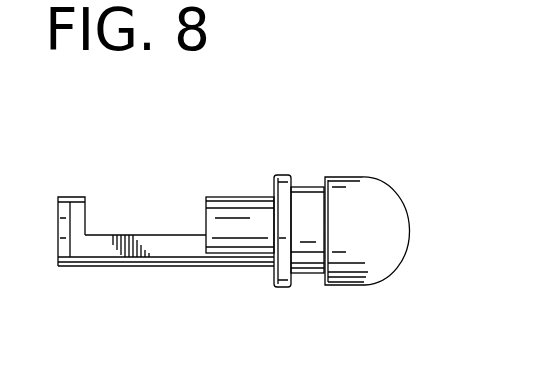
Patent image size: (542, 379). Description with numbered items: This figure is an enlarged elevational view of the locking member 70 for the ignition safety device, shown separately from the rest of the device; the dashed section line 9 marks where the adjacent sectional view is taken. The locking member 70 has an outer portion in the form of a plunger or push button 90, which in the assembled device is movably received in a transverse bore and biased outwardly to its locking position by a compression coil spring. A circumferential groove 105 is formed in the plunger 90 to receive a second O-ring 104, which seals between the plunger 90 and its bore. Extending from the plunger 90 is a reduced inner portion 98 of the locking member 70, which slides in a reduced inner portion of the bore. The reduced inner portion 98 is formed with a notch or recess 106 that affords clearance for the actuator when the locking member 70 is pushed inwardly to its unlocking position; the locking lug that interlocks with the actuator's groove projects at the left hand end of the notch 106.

The section line 9- 9 is at (82, 153).
The locking member 70 is at (420, 228).
The plunger 90 is at (345, 177).
The reduced inner portion 98 is at (230, 267).
The second O-ring 104 is at (87, 222).
The circumferential groove 105 is at (297, 187).
The notch 106 is at (140, 233).